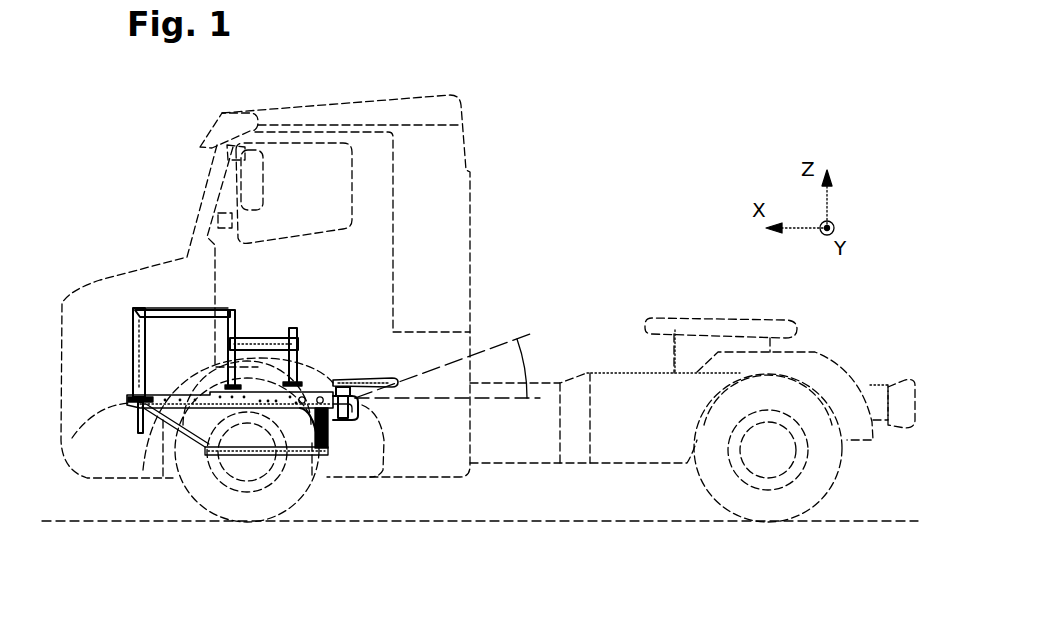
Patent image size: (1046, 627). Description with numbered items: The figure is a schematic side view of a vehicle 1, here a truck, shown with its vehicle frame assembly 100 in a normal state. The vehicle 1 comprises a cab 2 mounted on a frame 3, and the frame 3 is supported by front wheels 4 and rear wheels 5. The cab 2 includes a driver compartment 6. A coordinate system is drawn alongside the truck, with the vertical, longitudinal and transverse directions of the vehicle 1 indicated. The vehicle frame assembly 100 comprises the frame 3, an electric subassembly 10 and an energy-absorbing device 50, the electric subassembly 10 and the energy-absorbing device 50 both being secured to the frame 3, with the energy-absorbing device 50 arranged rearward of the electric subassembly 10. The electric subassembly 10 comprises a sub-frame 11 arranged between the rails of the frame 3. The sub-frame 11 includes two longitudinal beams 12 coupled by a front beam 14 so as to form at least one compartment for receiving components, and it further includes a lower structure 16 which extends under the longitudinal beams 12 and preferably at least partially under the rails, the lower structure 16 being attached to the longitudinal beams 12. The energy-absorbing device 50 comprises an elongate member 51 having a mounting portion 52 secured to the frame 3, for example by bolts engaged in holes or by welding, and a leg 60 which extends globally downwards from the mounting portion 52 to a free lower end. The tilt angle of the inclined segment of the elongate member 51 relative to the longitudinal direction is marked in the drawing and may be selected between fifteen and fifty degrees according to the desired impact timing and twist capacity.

The vehicle 1 is at (118, 139).
The cab 2 is at (468, 172).
The frame 3 is at (513, 443).
The front wheels 4 is at (227, 500).
The rear wheels 5 is at (768, 503).
The driver compartment 6 is at (311, 200).
The electric subassembly 10 is at (128, 337).
The sub-frame 11 is at (130, 377).
The longitudinal beams 12 is at (205, 415).
The front beam 14 is at (140, 420).
The lower structure 16 is at (248, 455).
The energy-absorbing device 50 is at (400, 370).
The elongate member 51 is at (366, 383).
The mounting portion 52 is at (347, 375).
The leg 60 is at (355, 412).
The vehicle frame assembly 100 is at (118, 442).